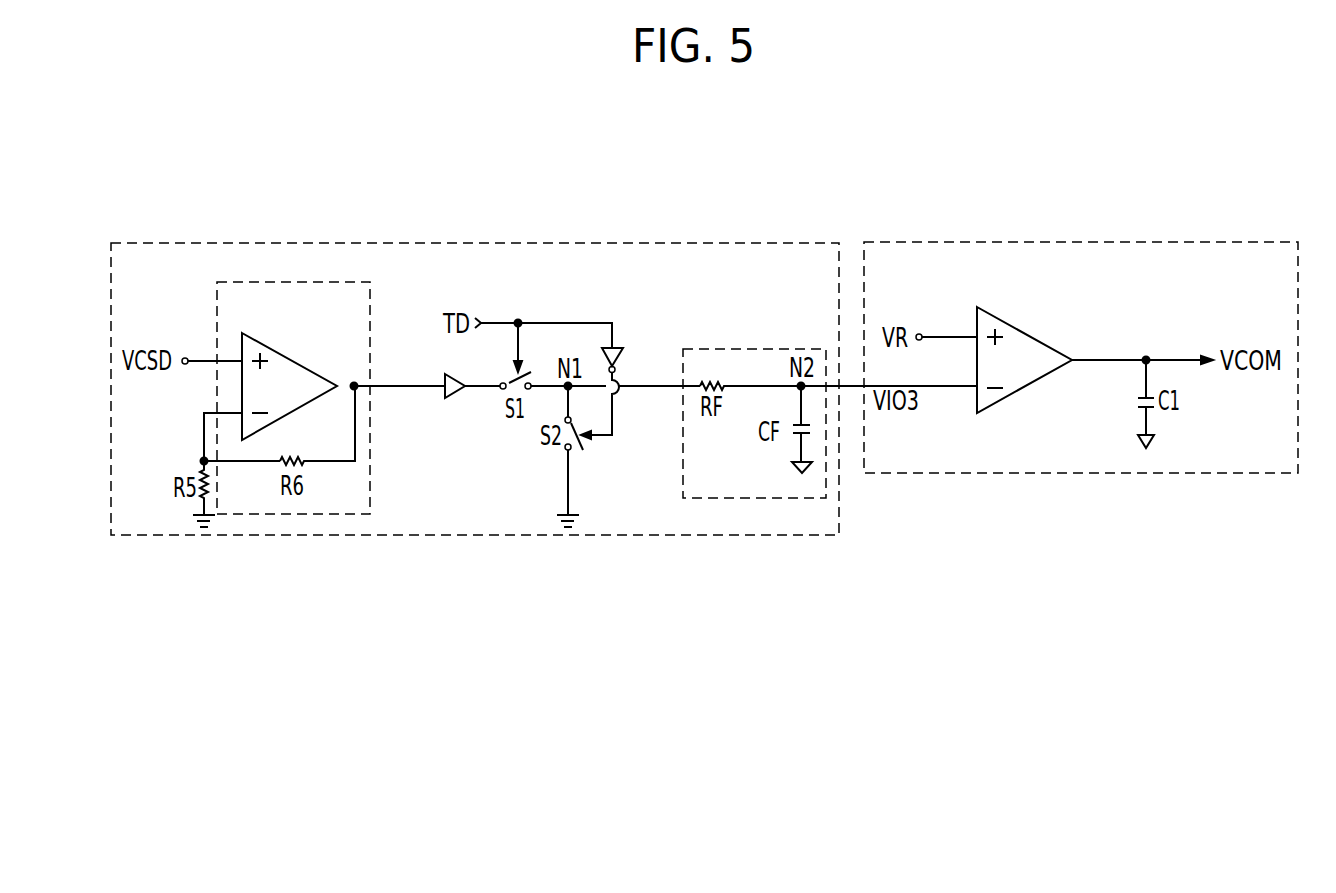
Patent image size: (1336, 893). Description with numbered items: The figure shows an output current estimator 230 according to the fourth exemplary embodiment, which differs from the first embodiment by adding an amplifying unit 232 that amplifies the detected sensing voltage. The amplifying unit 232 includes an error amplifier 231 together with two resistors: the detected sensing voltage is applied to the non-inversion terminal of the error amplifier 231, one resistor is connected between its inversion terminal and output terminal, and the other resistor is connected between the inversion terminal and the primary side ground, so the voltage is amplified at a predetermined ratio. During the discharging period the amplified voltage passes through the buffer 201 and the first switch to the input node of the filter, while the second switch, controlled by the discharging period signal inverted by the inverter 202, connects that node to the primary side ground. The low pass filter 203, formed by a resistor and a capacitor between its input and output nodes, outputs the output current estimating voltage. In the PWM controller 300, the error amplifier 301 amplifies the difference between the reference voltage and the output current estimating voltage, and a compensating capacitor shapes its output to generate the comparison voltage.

The output current estimator 230 is at (551, 243).
The amplifying unit 232 is at (313, 282).
The error amplifier 231 is at (290, 358).
The buffer 201 is at (445, 375).
The inverter 202 is at (622, 358).
The low pass filter 203 is at (764, 349).
The PWM controller 300 is at (1132, 242).
The error amplifier 301 is at (1025, 332).